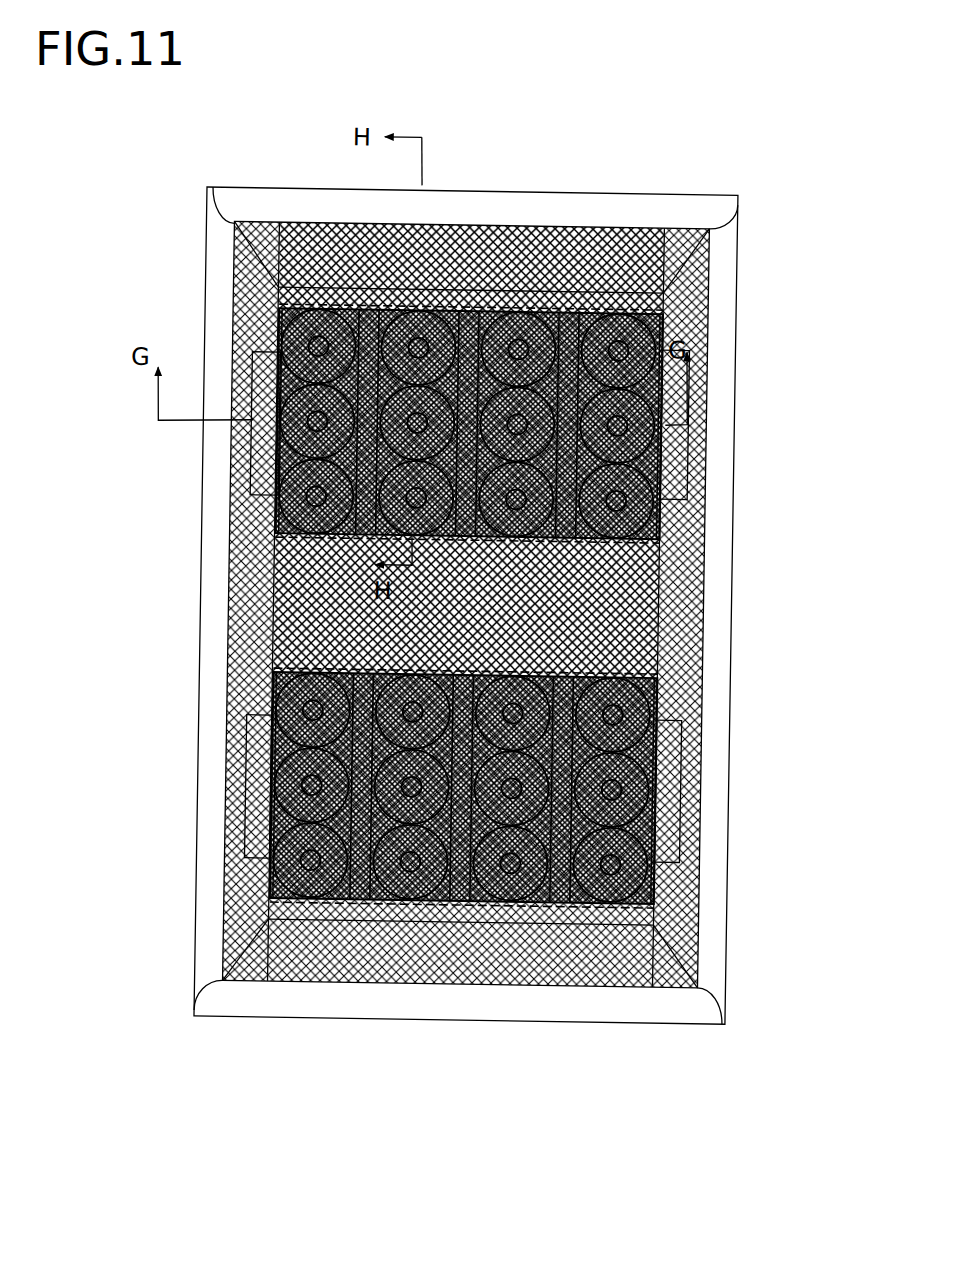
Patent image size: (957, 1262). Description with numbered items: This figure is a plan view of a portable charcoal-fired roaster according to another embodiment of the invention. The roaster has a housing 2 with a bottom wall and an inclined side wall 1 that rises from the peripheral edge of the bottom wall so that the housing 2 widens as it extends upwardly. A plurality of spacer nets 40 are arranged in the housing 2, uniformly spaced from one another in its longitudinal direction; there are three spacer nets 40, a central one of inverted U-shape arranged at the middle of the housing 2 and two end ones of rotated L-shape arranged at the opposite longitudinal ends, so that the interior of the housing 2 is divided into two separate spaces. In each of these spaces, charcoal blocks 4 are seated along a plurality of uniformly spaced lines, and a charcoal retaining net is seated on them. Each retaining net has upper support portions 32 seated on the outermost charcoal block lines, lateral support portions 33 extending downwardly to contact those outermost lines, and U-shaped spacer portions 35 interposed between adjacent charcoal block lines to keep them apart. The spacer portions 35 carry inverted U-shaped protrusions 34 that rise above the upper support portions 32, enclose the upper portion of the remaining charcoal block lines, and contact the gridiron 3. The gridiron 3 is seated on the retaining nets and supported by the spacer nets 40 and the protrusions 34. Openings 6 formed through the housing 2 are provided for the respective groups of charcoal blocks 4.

The inclined side wall 1 is at (262, 962).
The housing 2 is at (189, 883).
The gridiron 3 is at (247, 649).
The charcoal blocks 4 is at (660, 846).
The openings 6 is at (261, 714).
The upper support portions 32 is at (690, 389).
The lateral support portions 33 is at (669, 438).
The protrusions 34 is at (667, 485).
The spacer portions 35 is at (575, 537).
The spacer nets 40 is at (631, 250).